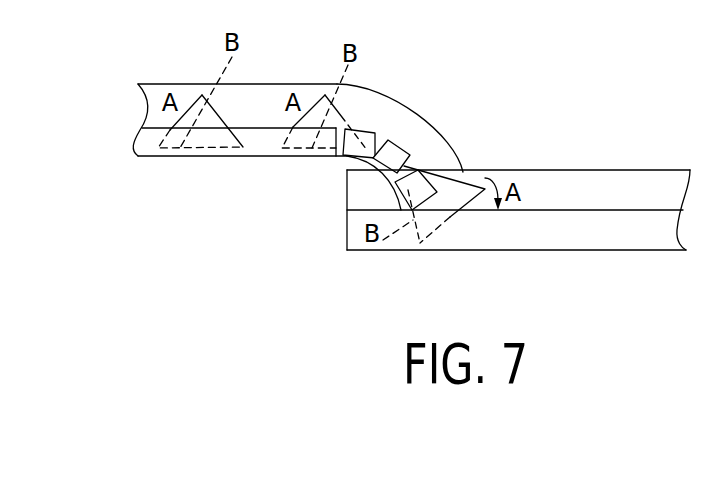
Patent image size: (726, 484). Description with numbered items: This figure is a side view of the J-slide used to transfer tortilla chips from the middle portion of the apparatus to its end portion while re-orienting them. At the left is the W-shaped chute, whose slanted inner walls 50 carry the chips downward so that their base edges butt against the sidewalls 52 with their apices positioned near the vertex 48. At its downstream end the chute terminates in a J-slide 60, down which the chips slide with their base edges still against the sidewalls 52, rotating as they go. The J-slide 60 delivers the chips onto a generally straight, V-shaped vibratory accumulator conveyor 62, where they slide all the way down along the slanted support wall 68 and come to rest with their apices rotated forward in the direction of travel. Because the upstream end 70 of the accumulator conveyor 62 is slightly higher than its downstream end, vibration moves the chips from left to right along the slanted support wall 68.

The vertex of the W-shaped chute 48 is at (155, 82).
The slanted inner walls 50 is at (250, 98).
The sidewalls 52 is at (142, 138).
The J-slide 60 is at (458, 95).
The V-shaped vibratory accumulator conveyor 62 is at (623, 233).
The slanted support wall 68 is at (600, 185).
The upstream end of the accumulator conveyor 70 is at (322, 248).